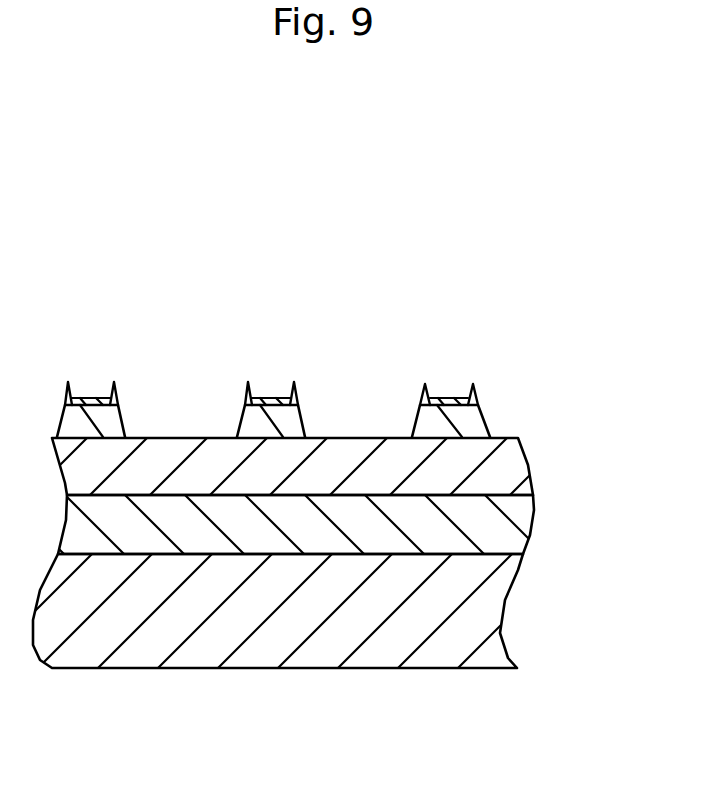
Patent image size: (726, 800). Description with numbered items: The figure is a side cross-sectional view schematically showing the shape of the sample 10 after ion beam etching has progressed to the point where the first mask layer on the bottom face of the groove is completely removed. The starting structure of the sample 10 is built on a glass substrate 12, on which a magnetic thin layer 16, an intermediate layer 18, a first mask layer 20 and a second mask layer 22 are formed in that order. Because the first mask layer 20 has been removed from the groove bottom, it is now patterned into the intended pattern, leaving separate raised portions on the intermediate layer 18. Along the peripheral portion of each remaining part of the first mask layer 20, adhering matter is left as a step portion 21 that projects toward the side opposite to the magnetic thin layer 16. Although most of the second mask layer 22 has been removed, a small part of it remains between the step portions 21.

The sample 10 is at (317, 253).
The glass substrate 12 is at (507, 597).
The magnetic thin layer 16 is at (533, 530).
The intermediate layer 18 is at (530, 473).
The first mask layer 20 is at (487, 427).
The step portion 21 is at (115, 392).
The second mask layer 22 is at (458, 403).